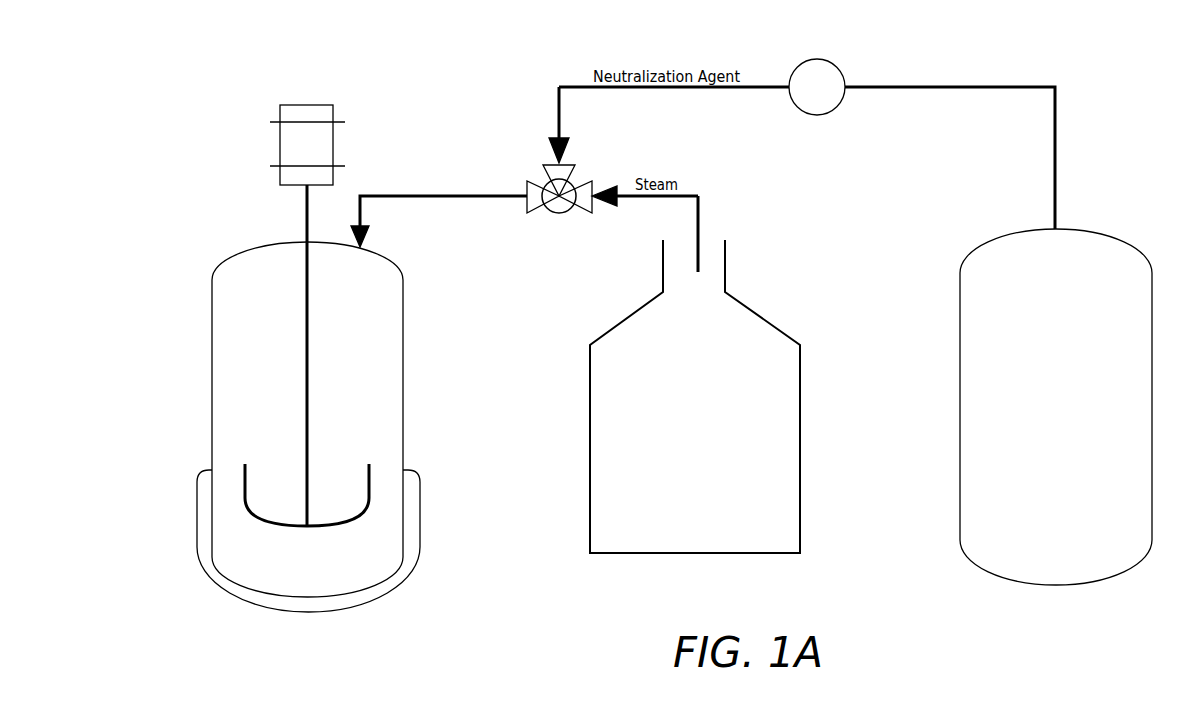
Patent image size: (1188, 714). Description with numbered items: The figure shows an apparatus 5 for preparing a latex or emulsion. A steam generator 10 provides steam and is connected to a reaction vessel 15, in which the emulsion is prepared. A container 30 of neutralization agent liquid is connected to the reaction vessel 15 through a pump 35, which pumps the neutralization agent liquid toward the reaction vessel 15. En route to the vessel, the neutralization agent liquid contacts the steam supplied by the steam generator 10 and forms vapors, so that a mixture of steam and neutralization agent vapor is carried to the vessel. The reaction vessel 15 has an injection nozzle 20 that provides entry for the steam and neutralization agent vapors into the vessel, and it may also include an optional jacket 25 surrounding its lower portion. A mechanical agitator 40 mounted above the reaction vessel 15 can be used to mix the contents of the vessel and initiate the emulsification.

The apparatus 5 is at (1078, 55).
The steam generator 10 is at (760, 553).
The reaction vessel 15 is at (363, 562).
The injection nozzle 20 is at (363, 212).
The jacket 25 is at (422, 543).
The container 30 is at (960, 456).
The pump 35 is at (836, 68).
The mechanical agitator 40 is at (307, 105).